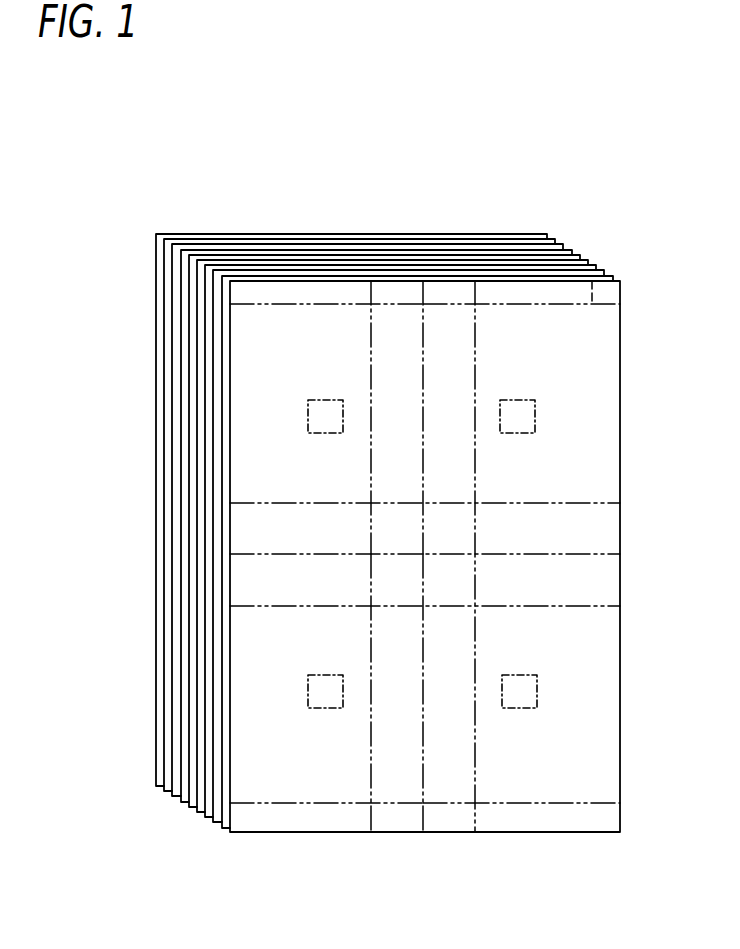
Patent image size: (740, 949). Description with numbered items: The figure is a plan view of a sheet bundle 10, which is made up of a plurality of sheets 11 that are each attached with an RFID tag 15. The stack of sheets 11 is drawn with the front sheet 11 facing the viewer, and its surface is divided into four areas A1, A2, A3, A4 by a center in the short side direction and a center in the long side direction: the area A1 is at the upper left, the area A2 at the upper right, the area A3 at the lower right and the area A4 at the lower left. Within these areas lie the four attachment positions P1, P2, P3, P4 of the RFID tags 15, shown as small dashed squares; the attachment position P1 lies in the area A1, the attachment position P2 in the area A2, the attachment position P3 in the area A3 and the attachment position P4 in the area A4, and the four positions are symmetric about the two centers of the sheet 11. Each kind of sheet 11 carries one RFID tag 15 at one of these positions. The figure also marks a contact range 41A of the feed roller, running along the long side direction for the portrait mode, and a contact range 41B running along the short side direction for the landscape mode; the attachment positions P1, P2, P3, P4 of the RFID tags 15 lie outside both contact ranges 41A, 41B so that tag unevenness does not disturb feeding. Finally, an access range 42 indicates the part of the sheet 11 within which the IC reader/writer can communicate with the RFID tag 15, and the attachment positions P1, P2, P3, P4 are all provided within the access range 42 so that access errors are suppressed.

The sheet bundle 10 is at (424, 105).
The sheet 11 is at (622, 303).
The access range 42 is at (594, 260).
The contact range 41A is at (477, 297).
The contact range 41B is at (604, 503).
The RFID tag 15 is at (326, 420).
The area A1 is at (318, 290).
The area A2 is at (517, 292).
The area A3 is at (536, 818).
The area A4 is at (327, 815).
The attachment position P1 is at (333, 385).
The attachment position P2 is at (525, 385).
The attachment position P3 is at (526, 661).
The attachment position P4 is at (333, 661).